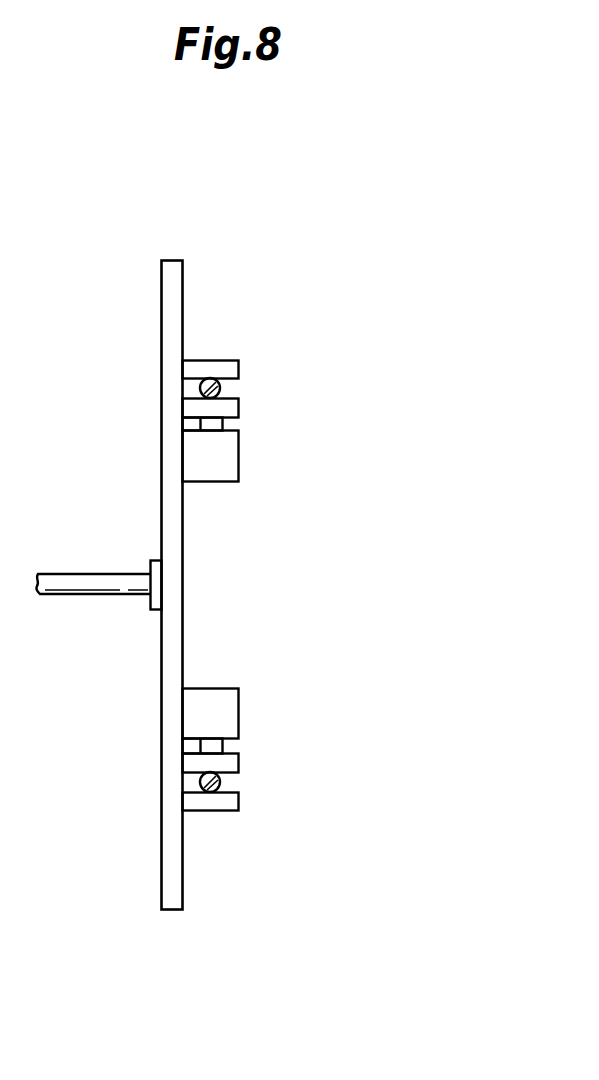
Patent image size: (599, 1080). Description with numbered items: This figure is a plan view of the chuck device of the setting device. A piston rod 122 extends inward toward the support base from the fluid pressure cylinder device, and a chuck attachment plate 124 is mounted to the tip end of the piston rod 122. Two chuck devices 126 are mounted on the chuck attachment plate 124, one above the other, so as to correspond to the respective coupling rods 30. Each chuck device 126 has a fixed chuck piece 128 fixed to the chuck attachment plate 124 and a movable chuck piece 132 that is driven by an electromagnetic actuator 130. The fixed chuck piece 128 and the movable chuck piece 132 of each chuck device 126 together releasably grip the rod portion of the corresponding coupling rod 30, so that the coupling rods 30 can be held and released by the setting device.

The coupling rod 30 is at (210, 379).
The piston rod 122 is at (83, 595).
The chuck attachment plate 124 is at (178, 575).
The chuck device 126 is at (262, 424).
The fixed chuck piece 128 is at (239, 370).
The electromagnetic actuator 130 is at (213, 472).
The movable chuck piece 132 is at (239, 407).